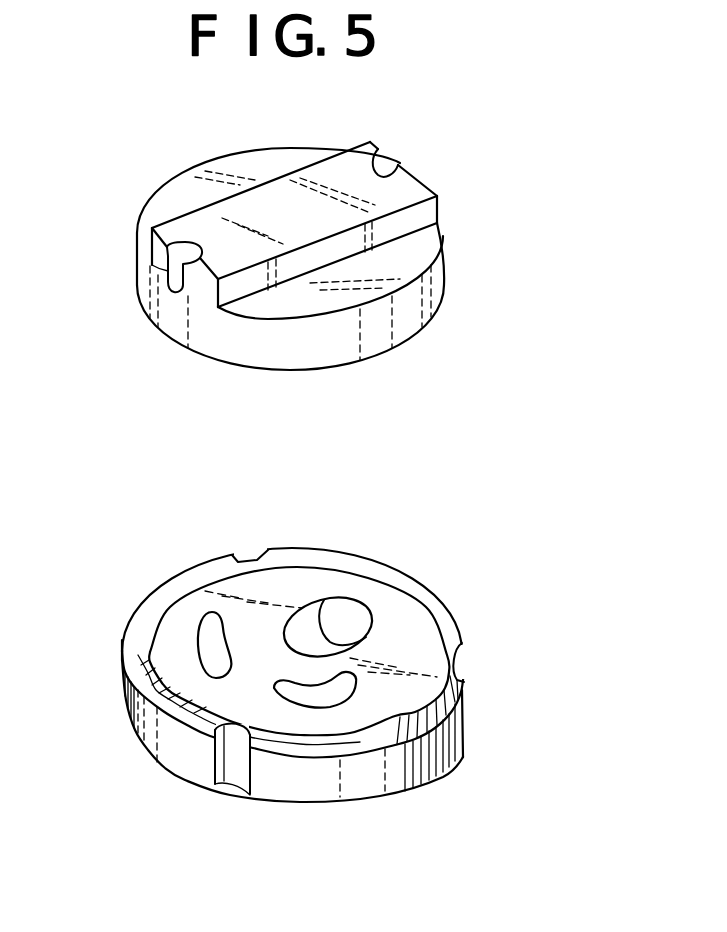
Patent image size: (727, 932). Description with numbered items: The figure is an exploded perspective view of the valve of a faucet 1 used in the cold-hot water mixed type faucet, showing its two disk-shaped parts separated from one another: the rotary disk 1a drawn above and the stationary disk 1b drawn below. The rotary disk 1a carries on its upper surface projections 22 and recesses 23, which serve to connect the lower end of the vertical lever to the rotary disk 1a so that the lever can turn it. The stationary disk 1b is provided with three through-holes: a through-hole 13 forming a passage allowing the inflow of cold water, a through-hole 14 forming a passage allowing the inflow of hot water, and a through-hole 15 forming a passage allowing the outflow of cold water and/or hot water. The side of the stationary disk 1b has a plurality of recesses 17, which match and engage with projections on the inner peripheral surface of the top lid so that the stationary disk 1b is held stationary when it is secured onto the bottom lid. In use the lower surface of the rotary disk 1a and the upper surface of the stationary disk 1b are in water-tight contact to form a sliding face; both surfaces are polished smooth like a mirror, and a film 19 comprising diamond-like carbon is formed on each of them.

The valve of a faucet 1 is at (495, 382).
The rotary disk 1a is at (444, 266).
The stationary disk 1b is at (463, 718).
The through-hole 13 is at (210, 642).
The through-hole 14 is at (347, 699).
The through-hole 15 is at (345, 616).
The recesses 17 is at (257, 558).
The film 19 is at (396, 641).
The projections 22 is at (258, 205).
The recesses 23 is at (400, 162).